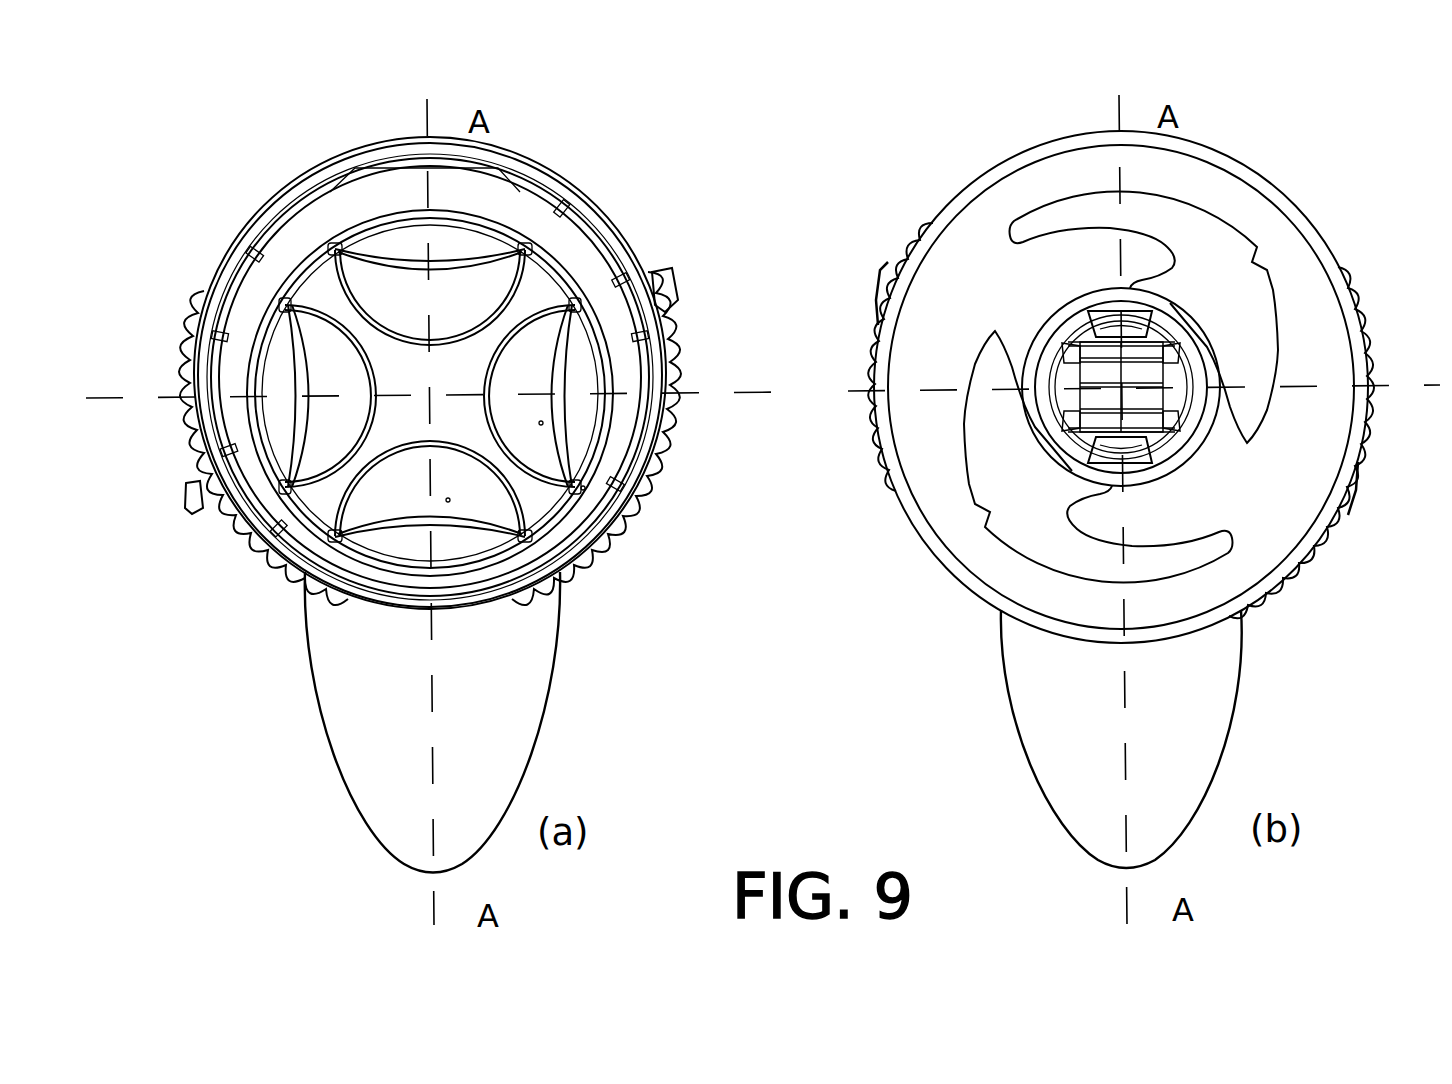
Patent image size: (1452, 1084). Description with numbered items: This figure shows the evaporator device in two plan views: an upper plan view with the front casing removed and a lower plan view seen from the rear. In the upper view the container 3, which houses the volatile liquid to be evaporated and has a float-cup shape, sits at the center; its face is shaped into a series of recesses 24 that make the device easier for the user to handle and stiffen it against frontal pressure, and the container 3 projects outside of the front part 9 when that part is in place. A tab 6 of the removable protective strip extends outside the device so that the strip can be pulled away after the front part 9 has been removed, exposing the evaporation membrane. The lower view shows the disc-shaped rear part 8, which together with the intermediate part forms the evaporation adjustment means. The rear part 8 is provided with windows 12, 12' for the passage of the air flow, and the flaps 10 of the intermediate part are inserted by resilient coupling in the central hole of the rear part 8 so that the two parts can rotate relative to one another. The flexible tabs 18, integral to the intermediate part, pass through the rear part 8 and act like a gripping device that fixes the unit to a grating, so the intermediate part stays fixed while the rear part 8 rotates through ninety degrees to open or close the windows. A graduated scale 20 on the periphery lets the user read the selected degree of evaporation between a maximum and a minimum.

The container 3 is at (523, 290).
The tab 6 is at (512, 703).
The rear part 8 is at (1280, 497).
The front part 9 is at (520, 220).
The flaps 10 is at (1097, 302).
The window 12 is at (1196, 278).
The window 12' is at (1047, 496).
The flexible tabs 18 is at (1137, 350).
The graduated scale 20 is at (672, 292).
The recesses 24 is at (448, 500).